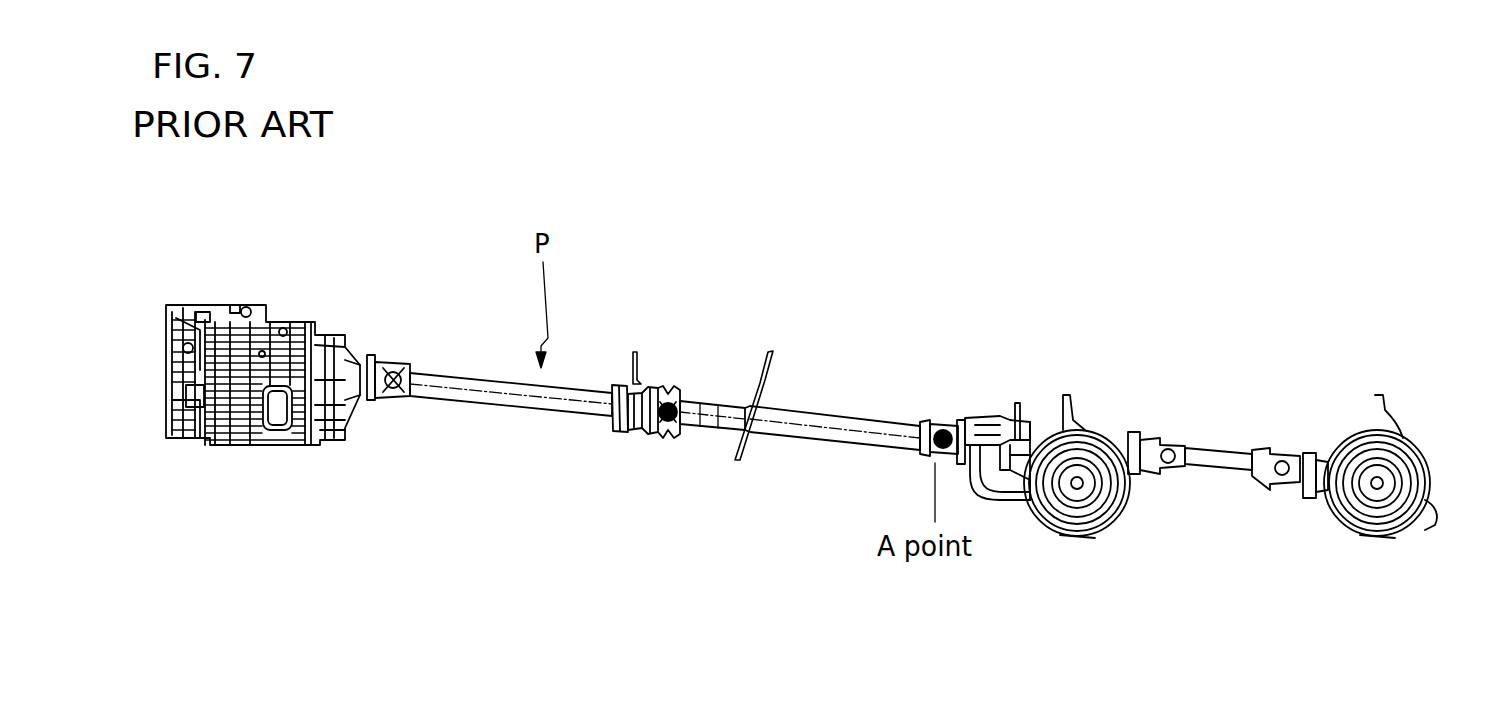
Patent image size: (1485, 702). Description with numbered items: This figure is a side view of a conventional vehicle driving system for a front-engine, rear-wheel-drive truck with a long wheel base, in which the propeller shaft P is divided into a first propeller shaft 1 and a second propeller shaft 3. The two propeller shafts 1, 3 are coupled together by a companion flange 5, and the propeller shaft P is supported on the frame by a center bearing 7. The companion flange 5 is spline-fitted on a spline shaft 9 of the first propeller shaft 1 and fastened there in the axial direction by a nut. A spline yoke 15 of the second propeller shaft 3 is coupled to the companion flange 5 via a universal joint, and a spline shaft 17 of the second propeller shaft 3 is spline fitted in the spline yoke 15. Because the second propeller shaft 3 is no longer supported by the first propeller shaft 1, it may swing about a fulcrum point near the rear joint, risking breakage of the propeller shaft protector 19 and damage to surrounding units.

The first propeller shaft 1 is at (495, 398).
The second propeller shaft 3 is at (833, 446).
The companion flange 5 is at (640, 434).
The center bearing 7 is at (628, 430).
The spline shaft 9 is at (646, 356).
The spline yoke 15 is at (688, 390).
The spline shaft 17 is at (702, 428).
The propeller shaft protector 19 is at (770, 378).